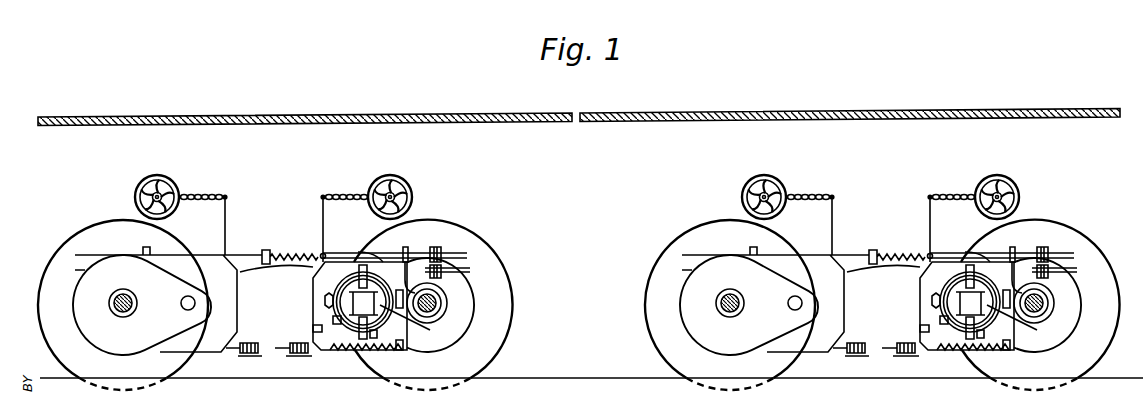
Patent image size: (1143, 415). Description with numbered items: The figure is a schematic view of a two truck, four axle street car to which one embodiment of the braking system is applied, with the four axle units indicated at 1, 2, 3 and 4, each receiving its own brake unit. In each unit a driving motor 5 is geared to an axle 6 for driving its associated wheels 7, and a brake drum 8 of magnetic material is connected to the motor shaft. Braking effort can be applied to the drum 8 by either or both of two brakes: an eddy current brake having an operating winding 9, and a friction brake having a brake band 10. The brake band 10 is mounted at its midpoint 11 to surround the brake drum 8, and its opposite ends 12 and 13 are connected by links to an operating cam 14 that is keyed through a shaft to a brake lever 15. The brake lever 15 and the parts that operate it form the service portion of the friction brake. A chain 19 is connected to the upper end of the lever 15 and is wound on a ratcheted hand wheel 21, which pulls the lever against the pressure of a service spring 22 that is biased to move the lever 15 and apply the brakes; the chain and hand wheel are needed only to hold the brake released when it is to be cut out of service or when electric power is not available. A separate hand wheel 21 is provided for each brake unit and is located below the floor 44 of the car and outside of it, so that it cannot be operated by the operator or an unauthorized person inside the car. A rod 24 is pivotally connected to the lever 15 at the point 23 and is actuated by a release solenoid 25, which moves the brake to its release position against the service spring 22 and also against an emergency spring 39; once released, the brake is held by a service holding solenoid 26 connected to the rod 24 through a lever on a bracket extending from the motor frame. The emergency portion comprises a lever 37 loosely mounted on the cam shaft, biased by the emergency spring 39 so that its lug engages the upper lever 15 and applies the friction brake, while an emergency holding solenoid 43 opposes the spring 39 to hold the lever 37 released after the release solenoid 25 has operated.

The unit 1 is at (44, 351).
The unit 2 is at (499, 358).
The unit 3 is at (656, 356).
The unit 4 is at (1106, 358).
The driving motor 5 is at (919, 287).
The axle 6 is at (1054, 305).
The wheels 7 is at (1094, 262).
The brake drum 8 is at (990, 272).
The operating winding 9 is at (707, 320).
The brake band 10 is at (981, 336).
The midpoint 11 is at (720, 327).
The end of brake band 12 is at (662, 300).
The end of brake band 13 is at (633, 330).
The operating cam 14 is at (932, 300).
The brake lever 15 is at (935, 218).
The chain 19 is at (953, 190).
The ratcheted hand wheel 21 is at (1020, 180).
The service spring 22 is at (900, 254).
The point 23 is at (932, 255).
The rod 24 is at (932, 258).
The release solenoid 25 is at (1047, 250).
The service holding solenoid 26 is at (1062, 278).
The lever 37 is at (932, 328).
The emergency spring 39 is at (969, 352).
The emergency holding solenoid 43 is at (909, 354).
The floor 44 is at (560, 122).